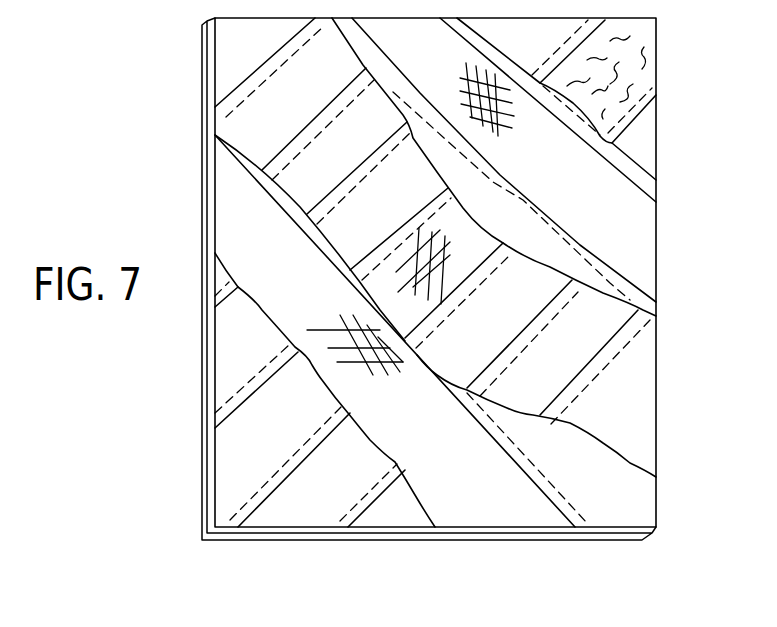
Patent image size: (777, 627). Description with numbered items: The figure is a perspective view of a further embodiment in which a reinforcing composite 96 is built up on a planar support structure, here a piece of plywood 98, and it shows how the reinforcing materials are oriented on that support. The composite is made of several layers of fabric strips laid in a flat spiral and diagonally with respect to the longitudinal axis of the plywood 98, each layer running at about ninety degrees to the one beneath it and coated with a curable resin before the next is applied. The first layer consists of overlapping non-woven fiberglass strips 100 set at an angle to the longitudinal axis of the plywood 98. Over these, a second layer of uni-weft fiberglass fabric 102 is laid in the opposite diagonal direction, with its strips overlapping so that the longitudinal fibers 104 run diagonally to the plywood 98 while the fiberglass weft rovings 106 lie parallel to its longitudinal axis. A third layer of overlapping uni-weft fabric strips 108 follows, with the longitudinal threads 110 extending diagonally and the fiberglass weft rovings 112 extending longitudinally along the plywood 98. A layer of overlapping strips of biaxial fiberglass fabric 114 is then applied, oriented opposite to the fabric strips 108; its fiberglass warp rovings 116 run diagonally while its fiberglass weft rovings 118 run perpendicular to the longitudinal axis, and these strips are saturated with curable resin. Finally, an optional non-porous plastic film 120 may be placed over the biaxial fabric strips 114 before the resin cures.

The reinforcing composite 96 is at (657, 217).
The plywood 98 is at (204, 93).
The non-woven fiberglass strips 100 is at (641, 68).
The uni-weft fiberglass fabric 102 is at (635, 262).
The longitudinal fibers 104 is at (463, 95).
The fiberglass weft rovings 106 is at (498, 136).
The uni-weft fabric strips 108 is at (632, 407).
The longitudinal threads 110 is at (417, 298).
The fiberglass weft rovings 112 is at (418, 256).
The biaxial fiberglass fabric 114 is at (232, 213).
The fiberglass warp rovings 116 is at (333, 327).
The fiberglass weft rovings 118 is at (337, 363).
The non-porous plastic film 120 is at (233, 459).